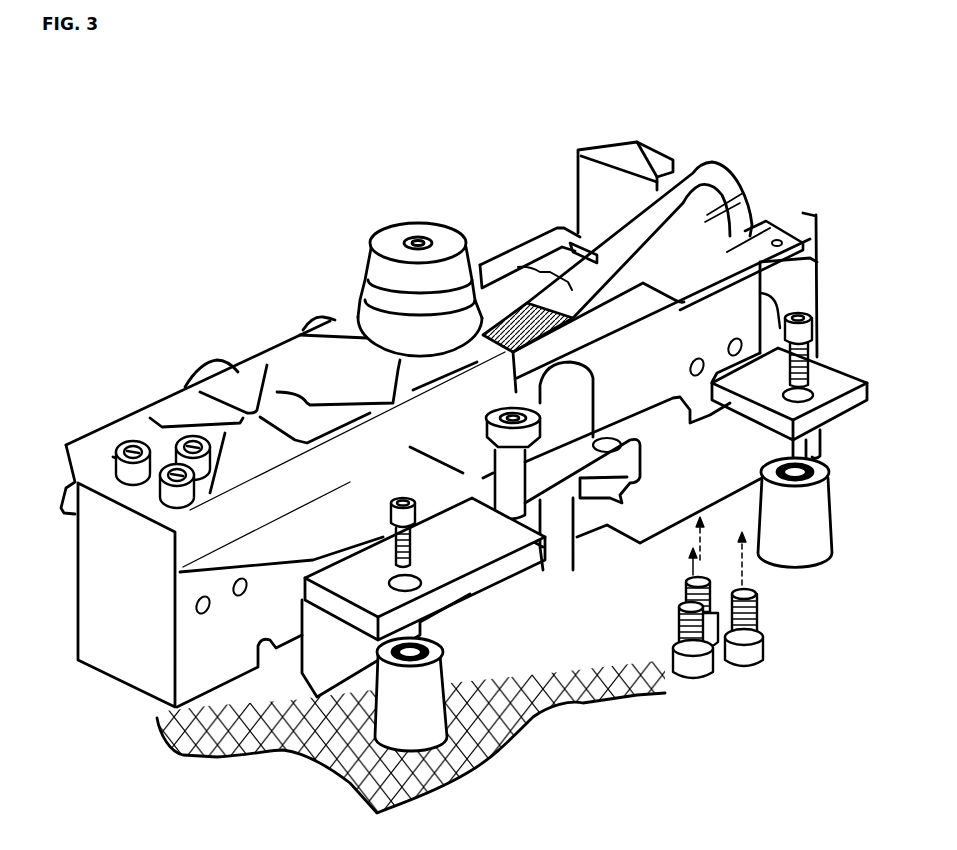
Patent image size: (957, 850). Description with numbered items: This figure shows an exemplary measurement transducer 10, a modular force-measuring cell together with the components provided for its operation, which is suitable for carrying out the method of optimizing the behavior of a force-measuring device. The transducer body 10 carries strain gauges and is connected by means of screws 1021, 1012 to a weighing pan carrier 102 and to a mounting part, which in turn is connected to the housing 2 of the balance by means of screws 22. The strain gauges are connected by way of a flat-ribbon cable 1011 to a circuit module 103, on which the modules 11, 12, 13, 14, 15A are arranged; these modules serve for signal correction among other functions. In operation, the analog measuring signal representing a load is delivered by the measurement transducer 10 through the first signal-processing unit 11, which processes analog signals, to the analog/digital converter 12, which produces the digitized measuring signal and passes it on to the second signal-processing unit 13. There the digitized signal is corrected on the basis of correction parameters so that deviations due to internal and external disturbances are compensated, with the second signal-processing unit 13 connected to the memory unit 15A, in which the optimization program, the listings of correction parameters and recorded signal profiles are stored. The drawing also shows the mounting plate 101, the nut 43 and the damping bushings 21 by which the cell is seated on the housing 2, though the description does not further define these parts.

The housing 2 is at (587, 704).
The measurement transducer 10 is at (127, 637).
The first signal-processing unit 11 is at (691, 219).
The analog/digital converter 12 is at (617, 257).
The second signal-processing unit 13 is at (617, 257).
The module 14 is at (617, 257).
The memory unit 15A is at (617, 257).
The vibration damping bushing 21 is at (425, 713).
The screws 22 is at (412, 508).
The nut 43 is at (455, 457).
The mounting plate 101 is at (447, 592).
The weighing pan carrier 102 is at (255, 338).
The circuit module 103 is at (574, 164).
The flat-ribbon cable 1011 is at (610, 262).
The screws 1012 is at (740, 680).
The screws 1021 is at (150, 437).